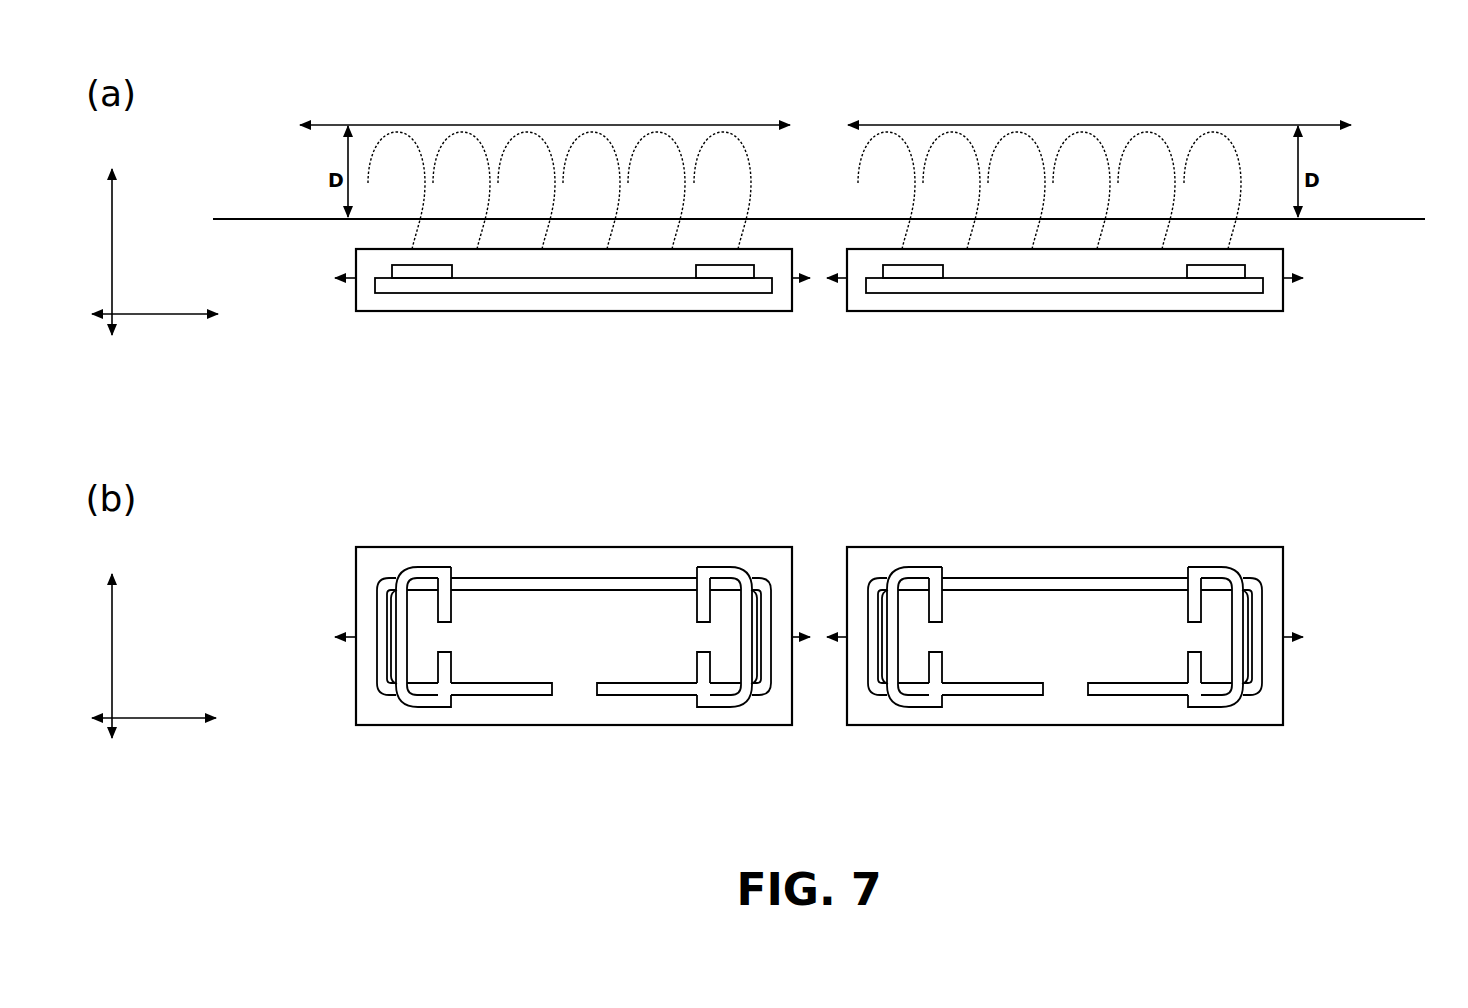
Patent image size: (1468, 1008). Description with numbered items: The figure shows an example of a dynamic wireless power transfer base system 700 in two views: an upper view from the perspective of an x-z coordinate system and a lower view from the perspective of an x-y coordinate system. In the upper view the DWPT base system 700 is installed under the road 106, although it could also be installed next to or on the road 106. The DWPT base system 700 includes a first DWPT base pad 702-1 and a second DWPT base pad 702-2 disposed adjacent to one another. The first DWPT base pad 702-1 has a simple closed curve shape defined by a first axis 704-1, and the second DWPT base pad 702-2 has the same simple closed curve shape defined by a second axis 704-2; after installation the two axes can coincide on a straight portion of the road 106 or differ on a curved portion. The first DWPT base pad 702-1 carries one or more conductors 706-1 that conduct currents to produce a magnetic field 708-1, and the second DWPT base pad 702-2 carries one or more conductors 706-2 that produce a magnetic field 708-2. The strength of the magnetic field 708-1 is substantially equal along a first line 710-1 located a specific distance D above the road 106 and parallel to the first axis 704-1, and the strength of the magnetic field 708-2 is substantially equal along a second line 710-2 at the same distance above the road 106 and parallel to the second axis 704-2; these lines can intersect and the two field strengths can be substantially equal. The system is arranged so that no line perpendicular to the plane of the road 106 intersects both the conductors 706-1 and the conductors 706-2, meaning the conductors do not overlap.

The DWPT base system 700 is at (216, 37).
The road 106 is at (1402, 218).
The first DWPT base pad 702-1 is at (552, 314).
The second DWPT base pad 702-2 is at (1048, 316).
The first axis 704-1 is at (346, 281).
The second axis 704-2 is at (1302, 284).
The one or more conductors 706-1 is at (725, 275).
The one or more conductors 706-2 is at (1218, 272).
The magnetic field 708-1 is at (310, 147).
The magnetic field 708-2 is at (1339, 155).
The first line 710-1 is at (340, 125).
The second line 710-2 is at (1270, 125).